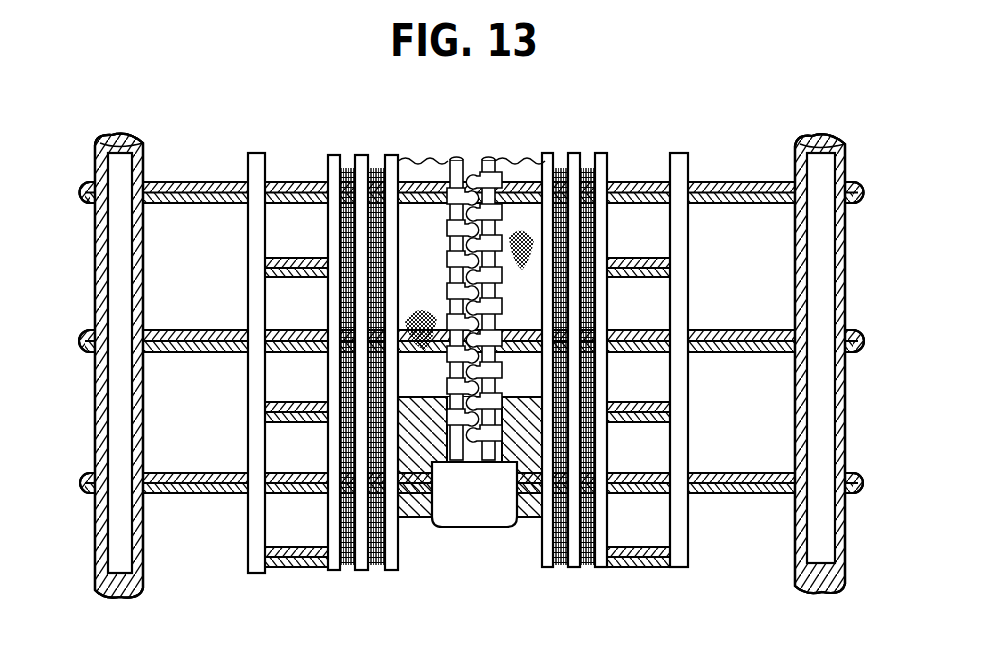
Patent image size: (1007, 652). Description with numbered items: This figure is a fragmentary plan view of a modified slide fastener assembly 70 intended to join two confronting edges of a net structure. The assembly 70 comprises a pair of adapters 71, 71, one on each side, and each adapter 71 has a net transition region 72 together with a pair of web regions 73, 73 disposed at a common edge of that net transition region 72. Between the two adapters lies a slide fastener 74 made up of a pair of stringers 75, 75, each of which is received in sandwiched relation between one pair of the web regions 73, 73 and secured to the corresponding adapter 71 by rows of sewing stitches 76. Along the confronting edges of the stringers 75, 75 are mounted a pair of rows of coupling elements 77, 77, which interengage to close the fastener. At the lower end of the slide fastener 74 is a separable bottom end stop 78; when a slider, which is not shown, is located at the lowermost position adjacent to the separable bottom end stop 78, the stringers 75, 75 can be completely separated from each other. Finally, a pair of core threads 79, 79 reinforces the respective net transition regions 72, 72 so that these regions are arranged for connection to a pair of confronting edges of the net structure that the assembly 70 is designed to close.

The slide fastener assembly 70 is at (70, 315).
The adapters 71 is at (189, 568).
The net transition region 72 is at (328, 102).
The web regions 73 is at (395, 102).
The slide fastener 74 is at (466, 157).
The stringers 75 is at (417, 167).
The sewing stitches 76 is at (374, 572).
The coupling elements 77 is at (477, 312).
The separable bottom end stop 78 is at (466, 516).
The core threads 79 is at (100, 434).